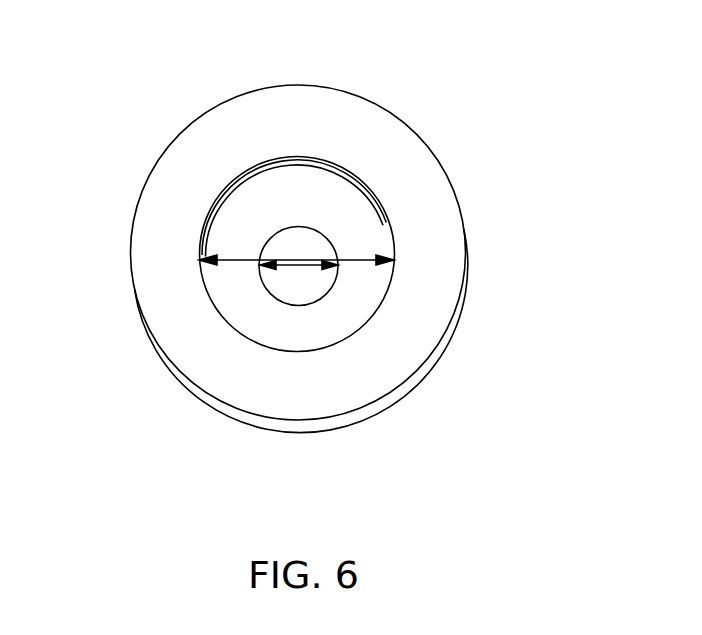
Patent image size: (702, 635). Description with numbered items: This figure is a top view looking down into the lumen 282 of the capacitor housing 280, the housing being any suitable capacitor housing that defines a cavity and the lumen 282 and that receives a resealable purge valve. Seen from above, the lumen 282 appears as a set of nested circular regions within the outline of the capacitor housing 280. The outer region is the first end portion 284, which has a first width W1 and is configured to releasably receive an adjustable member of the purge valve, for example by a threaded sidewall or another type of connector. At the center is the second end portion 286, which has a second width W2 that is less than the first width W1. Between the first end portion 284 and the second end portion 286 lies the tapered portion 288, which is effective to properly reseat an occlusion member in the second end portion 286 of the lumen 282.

The capacitor housing 280 is at (177, 190).
The lumen 282 is at (353, 238).
The first end portion 284 is at (333, 163).
The second end portion 286 is at (292, 227).
The tapered portion 288 is at (345, 305).
The first width W1 is at (243, 259).
The second width W2 is at (298, 267).